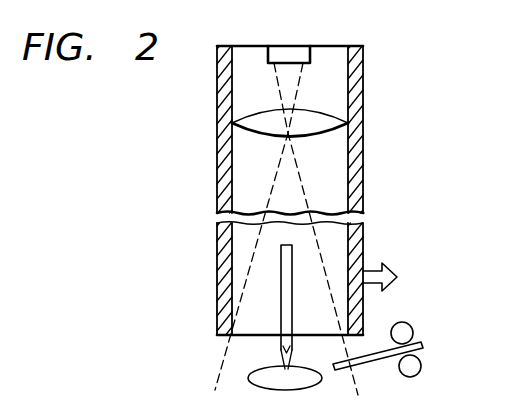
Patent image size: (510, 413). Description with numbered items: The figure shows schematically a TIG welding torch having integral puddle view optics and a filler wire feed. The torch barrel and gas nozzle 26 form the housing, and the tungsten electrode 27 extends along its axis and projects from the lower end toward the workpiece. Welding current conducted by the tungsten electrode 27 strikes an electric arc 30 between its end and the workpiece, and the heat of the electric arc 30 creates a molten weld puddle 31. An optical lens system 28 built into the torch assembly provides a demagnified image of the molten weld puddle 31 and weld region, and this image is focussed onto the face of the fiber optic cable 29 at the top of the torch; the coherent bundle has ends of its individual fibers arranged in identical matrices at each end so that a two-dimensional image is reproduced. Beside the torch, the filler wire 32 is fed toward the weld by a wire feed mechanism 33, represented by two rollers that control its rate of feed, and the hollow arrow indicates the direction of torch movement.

The torch barrel and gas nozzle 26 is at (356, 118).
The tungsten electrode 27 is at (282, 268).
The optical lens system 28 is at (233, 123).
The fiber optic cable 29 is at (290, 47).
The electric arc 30 is at (280, 358).
The molten weld puddle 31 is at (248, 378).
The filler wire 32 is at (402, 375).
The wire feed mechanism 33 is at (409, 324).